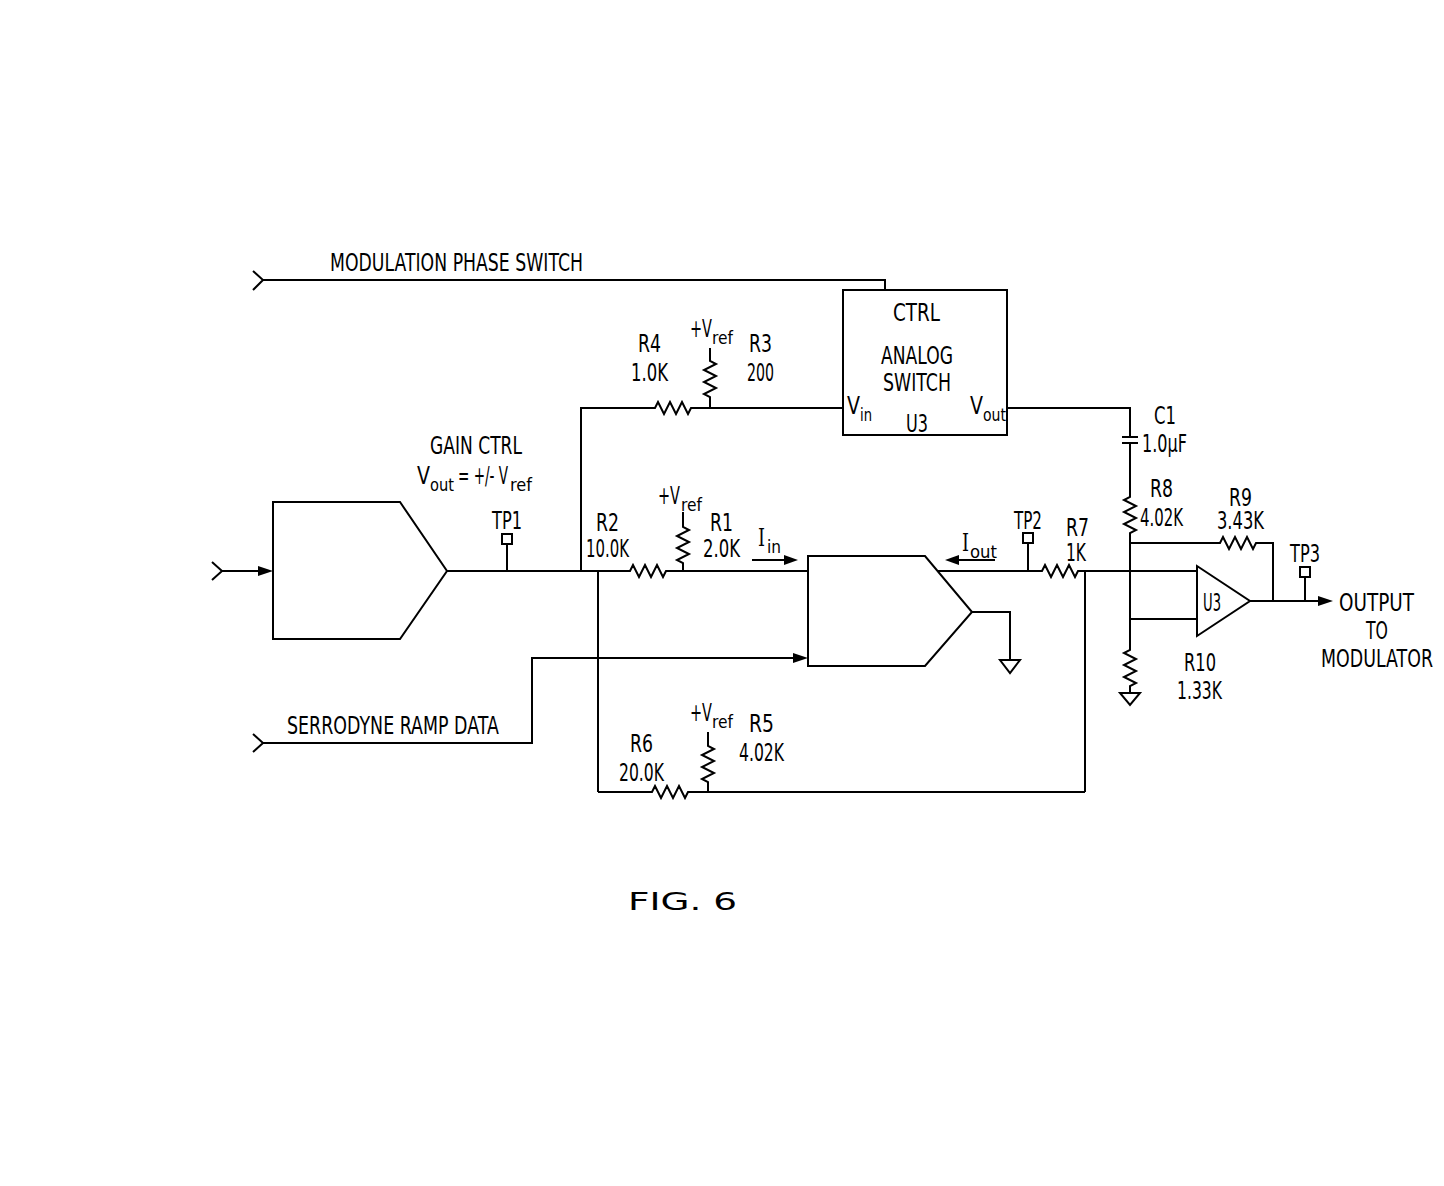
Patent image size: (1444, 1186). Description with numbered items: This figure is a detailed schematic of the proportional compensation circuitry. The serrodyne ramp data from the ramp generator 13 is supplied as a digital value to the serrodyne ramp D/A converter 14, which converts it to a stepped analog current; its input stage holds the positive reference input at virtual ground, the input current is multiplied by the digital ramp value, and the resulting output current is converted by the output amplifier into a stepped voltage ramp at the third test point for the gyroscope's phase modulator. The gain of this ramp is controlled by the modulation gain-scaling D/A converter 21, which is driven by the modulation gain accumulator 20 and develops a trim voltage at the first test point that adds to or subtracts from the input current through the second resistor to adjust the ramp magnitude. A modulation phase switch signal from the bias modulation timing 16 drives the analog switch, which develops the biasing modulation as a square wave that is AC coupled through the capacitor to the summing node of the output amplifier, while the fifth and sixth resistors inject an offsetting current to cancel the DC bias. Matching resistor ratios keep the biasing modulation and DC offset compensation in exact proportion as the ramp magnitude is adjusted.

The modulation gain-scaling D/A converter 21 is at (423, 603).
The D/A converter for the serrodyne ramp modulator 14 is at (928, 557).
The bias modulation timing 16 is at (196, 285).
The modulation gain accumulator 20 is at (172, 578).
The ramp generator 13 is at (190, 758).